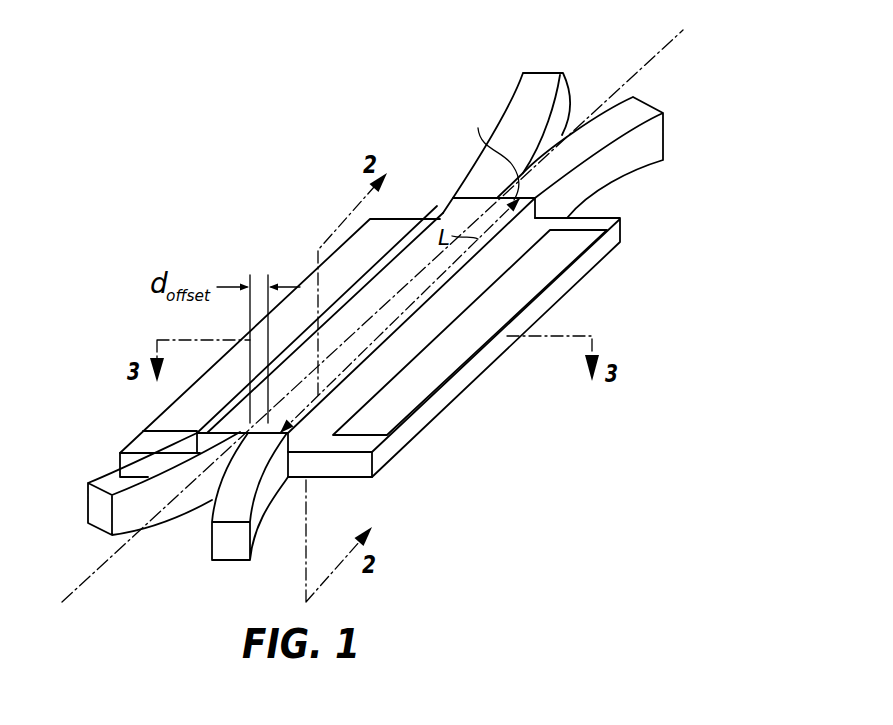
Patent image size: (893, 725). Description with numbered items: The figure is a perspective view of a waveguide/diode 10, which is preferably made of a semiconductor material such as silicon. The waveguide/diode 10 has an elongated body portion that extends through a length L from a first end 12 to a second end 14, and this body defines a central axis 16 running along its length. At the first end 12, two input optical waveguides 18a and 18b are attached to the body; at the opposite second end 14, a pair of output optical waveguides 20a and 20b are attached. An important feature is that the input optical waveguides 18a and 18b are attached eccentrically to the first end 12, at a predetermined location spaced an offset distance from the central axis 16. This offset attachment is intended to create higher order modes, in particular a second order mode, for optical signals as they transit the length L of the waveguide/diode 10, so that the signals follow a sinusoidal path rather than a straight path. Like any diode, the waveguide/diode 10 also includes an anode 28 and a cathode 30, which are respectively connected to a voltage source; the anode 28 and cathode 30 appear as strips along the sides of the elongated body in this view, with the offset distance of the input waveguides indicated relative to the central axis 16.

The waveguide/diode 10 is at (375, 327).
The first end 12 is at (231, 433).
The second end 14 is at (491, 154).
The central axis 16 is at (110, 560).
The input optical waveguide 18a is at (240, 500).
The input optical waveguide 18b is at (142, 509).
The output optical waveguide 20a is at (613, 118).
The output optical waveguide 20b is at (540, 82).
The anode 28 is at (400, 413).
The cathode 30 is at (143, 431).